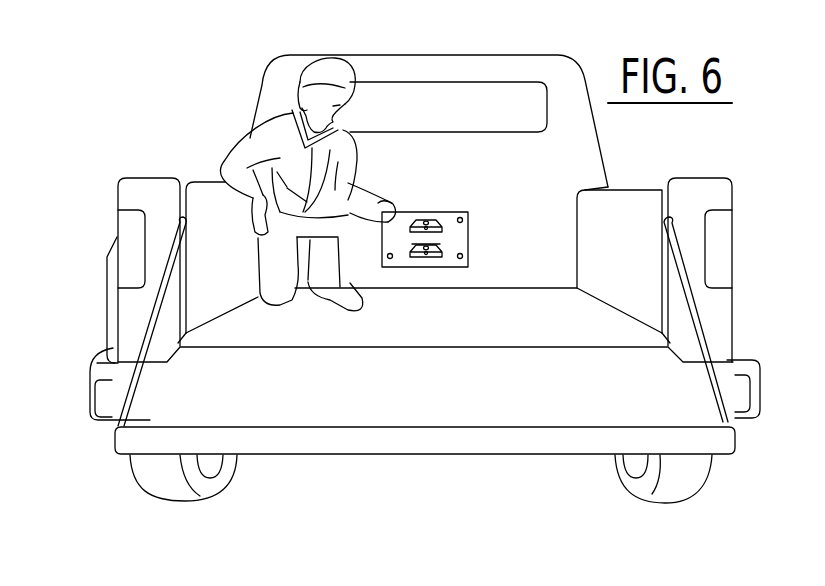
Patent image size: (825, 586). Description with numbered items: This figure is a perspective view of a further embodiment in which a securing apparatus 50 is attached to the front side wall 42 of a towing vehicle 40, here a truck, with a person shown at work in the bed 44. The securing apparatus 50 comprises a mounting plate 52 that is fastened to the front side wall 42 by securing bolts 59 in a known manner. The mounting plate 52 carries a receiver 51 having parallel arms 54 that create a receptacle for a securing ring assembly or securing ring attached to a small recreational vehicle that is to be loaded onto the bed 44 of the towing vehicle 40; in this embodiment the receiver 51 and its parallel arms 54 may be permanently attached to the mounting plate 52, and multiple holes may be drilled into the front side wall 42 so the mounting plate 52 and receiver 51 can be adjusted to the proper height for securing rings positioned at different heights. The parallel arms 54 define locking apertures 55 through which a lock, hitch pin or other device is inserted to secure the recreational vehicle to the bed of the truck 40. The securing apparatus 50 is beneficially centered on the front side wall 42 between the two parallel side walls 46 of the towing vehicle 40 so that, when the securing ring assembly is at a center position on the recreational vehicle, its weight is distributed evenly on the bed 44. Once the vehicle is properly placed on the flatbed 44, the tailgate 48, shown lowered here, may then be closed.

The towing vehicle 40 is at (571, 53).
The front side wall 42 is at (548, 222).
The bed 44 is at (250, 327).
The parallel side walls 46 is at (202, 205).
The tailgate 48 is at (690, 415).
The securing apparatus 50 is at (445, 251).
The receiver 51 is at (437, 247).
The mounting plate 52 is at (460, 245).
The parallel arms 54 is at (437, 217).
The locking apertures 55 is at (425, 225).
The securing bolts 59 is at (390, 258).